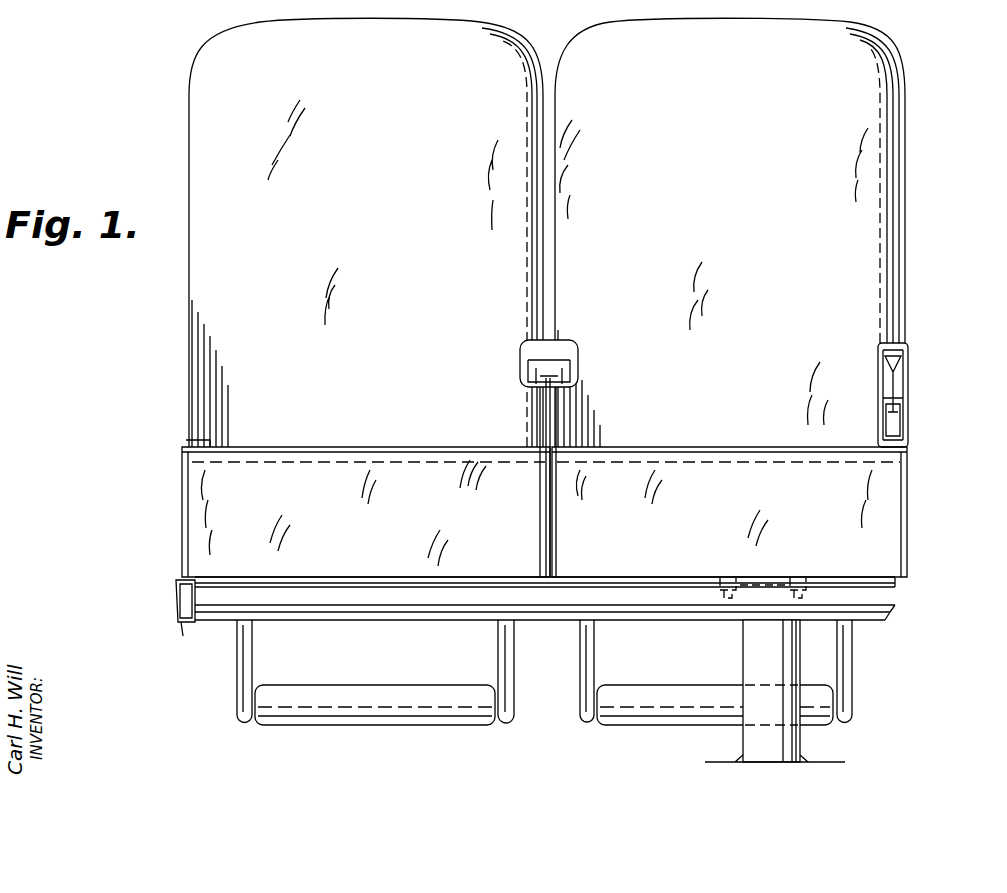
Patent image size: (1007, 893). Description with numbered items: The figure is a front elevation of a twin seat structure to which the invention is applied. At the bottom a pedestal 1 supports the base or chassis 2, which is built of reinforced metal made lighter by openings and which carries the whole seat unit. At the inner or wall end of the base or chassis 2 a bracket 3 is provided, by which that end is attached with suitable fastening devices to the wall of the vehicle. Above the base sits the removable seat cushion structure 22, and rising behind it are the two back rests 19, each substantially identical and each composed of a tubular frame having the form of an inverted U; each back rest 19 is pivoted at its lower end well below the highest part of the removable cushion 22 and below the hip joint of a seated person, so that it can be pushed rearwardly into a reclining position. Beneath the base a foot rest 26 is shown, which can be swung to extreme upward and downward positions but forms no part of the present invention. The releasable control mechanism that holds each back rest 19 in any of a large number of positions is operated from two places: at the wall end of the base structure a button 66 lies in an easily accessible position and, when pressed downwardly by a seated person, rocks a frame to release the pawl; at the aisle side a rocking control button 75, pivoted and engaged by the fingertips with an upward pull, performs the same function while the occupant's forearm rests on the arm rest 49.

The pedestal 1 is at (753, 740).
The base or chassis 2 is at (897, 598).
The bracket 3 is at (178, 588).
The back rest 19 is at (207, 220).
The removable seat cushion structure 22 is at (220, 538).
The foot rest 26 is at (513, 678).
The arm rest 49 is at (898, 347).
The button 66 is at (192, 442).
The rocking control button 75 is at (900, 418).